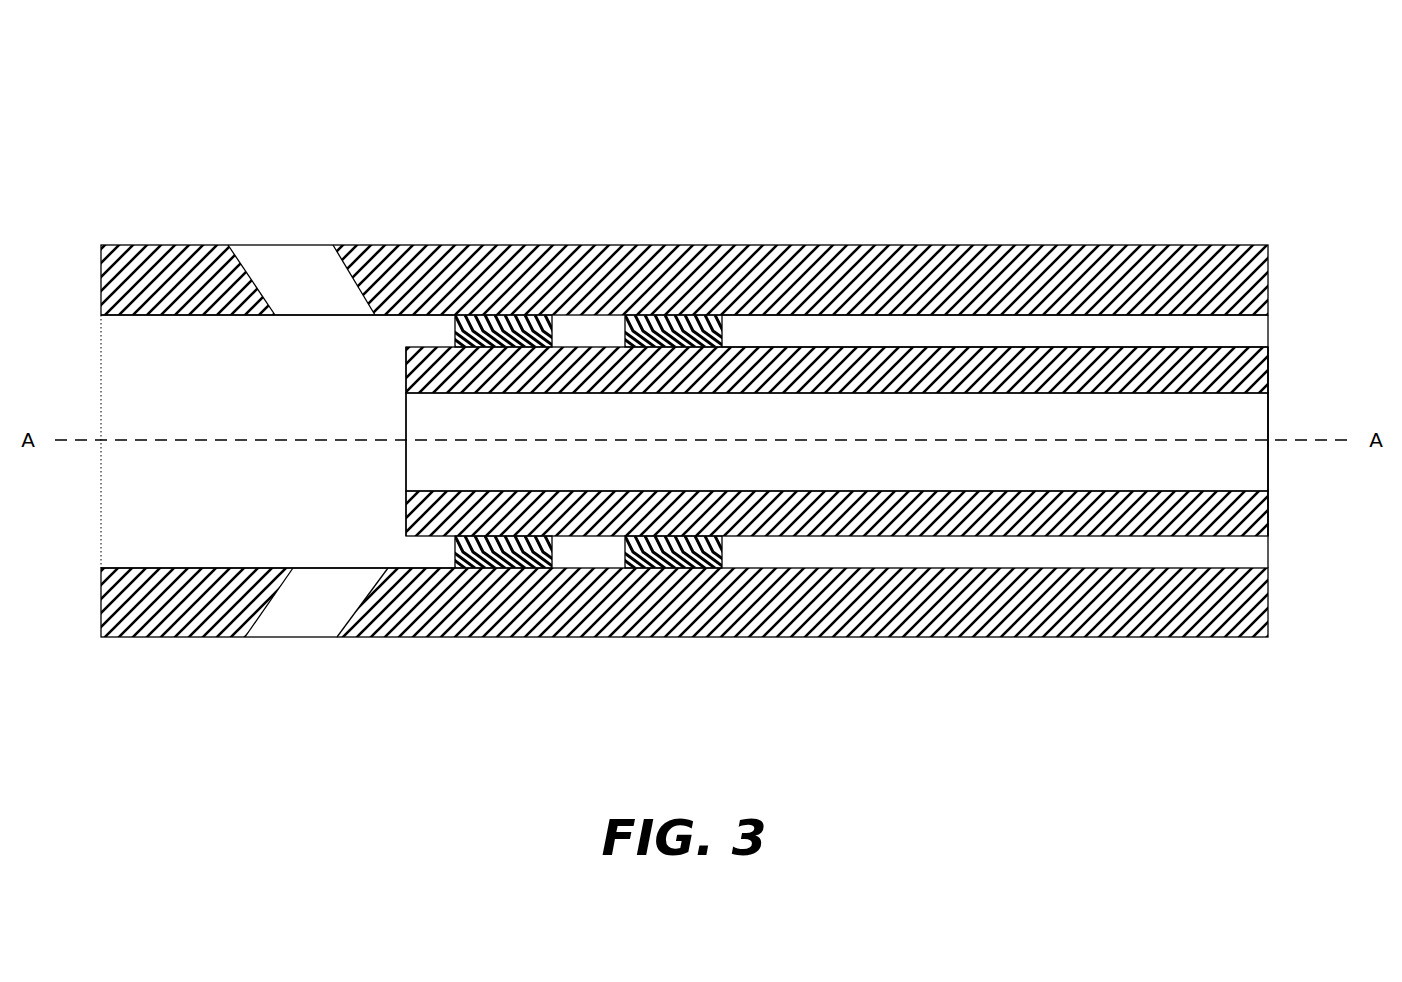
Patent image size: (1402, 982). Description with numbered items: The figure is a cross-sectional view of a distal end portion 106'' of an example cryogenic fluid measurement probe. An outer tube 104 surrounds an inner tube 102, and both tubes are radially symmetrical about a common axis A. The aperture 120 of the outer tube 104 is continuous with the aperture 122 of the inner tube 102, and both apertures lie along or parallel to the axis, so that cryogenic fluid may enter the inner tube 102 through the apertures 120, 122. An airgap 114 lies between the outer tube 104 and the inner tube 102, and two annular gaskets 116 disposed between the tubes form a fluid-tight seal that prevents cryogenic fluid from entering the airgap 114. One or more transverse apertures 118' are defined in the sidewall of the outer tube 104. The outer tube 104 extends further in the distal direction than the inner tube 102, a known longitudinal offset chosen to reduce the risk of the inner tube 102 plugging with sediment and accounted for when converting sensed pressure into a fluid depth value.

The distal end portion 106'' is at (670, 98).
The outer tube 104 is at (462, 245).
The transverse apertures 118' is at (308, 441).
The aperture of the outer tube 120 is at (182, 425).
The inner tube 102 is at (406, 376).
The aperture of the inner tube 122 is at (572, 425).
The airgap 114 is at (882, 339).
The gaskets 116 is at (455, 558).